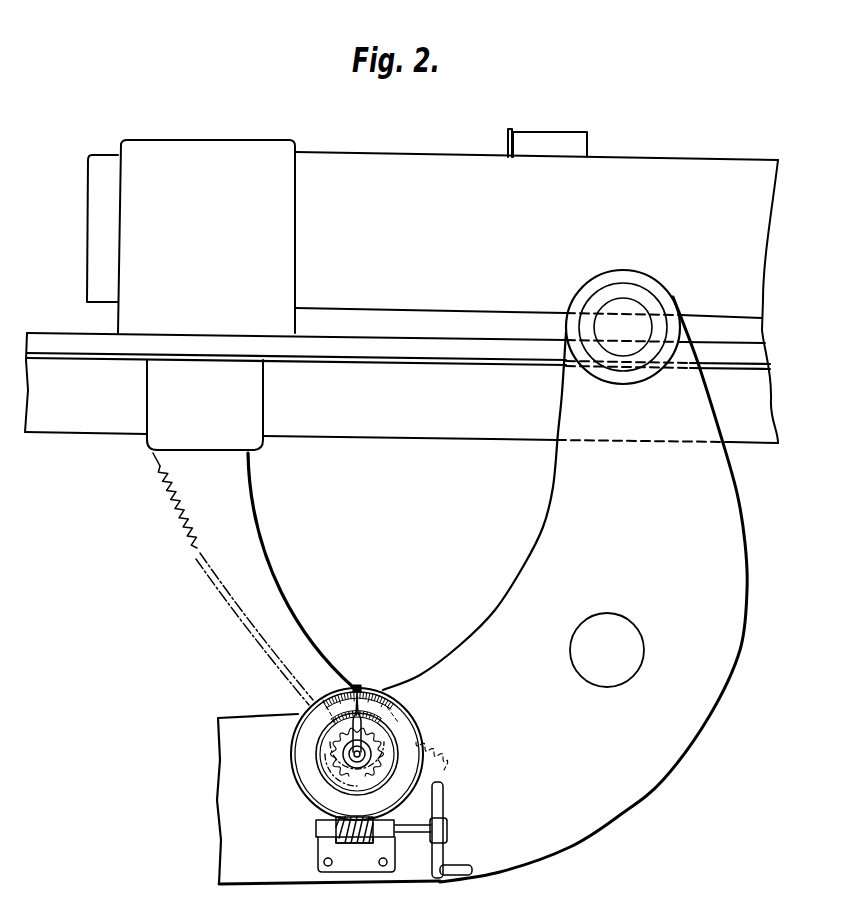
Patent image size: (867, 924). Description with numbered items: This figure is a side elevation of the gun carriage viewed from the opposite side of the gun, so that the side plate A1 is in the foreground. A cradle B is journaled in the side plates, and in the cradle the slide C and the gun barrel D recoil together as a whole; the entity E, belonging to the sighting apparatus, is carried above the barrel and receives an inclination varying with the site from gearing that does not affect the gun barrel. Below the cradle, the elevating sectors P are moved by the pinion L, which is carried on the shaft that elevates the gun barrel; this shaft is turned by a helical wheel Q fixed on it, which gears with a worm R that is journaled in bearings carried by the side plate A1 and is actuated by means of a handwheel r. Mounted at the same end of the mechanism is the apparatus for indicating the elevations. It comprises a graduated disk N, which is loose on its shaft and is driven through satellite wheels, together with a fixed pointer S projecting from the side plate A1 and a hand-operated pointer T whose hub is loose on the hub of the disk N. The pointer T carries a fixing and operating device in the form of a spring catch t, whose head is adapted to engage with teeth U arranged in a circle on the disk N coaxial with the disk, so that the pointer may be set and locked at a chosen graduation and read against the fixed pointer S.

The side plate A1 is at (595, 818).
The cradle B is at (457, 428).
The slide C is at (752, 359).
The gun barrel D is at (668, 172).
The entity F— E is at (557, 142).
The elevating sector P is at (193, 545).
The fixed pointer S is at (360, 686).
The hand-operated pointer T is at (396, 703).
The spring catch t is at (372, 720).
The teeth U is at (323, 739).
The graduated disk N is at (313, 773).
The pinion L is at (345, 777).
The helical wheel Q is at (325, 805).
The worm R is at (353, 841).
The handwheel r is at (437, 852).